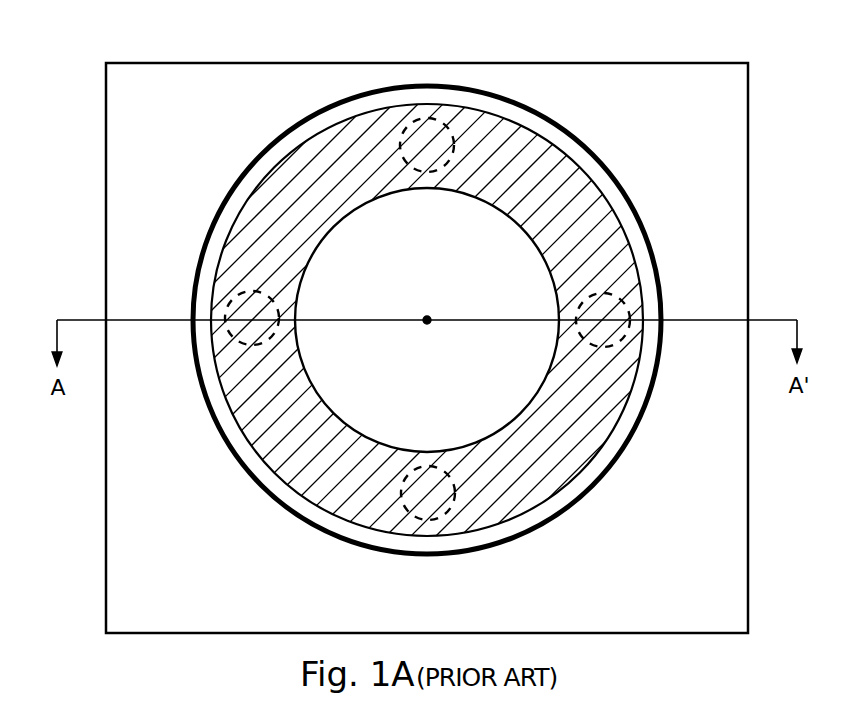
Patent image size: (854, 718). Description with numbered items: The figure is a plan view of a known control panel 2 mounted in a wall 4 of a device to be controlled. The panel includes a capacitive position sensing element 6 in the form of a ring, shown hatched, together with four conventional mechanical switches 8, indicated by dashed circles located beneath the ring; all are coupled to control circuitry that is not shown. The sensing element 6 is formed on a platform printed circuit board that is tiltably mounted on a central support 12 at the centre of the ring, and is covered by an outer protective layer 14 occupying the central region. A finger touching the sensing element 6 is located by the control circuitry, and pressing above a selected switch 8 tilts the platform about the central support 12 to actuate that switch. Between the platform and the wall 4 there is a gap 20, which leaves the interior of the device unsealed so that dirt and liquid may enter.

The control panel 2 is at (508, 92).
The wall 4 is at (161, 114).
The capacitive position sensing element 6 is at (560, 170).
The mechanical switches 8 is at (456, 150).
The central support 12 is at (431, 316).
The outer protective layer 14 is at (444, 402).
The gap 20 is at (612, 458).